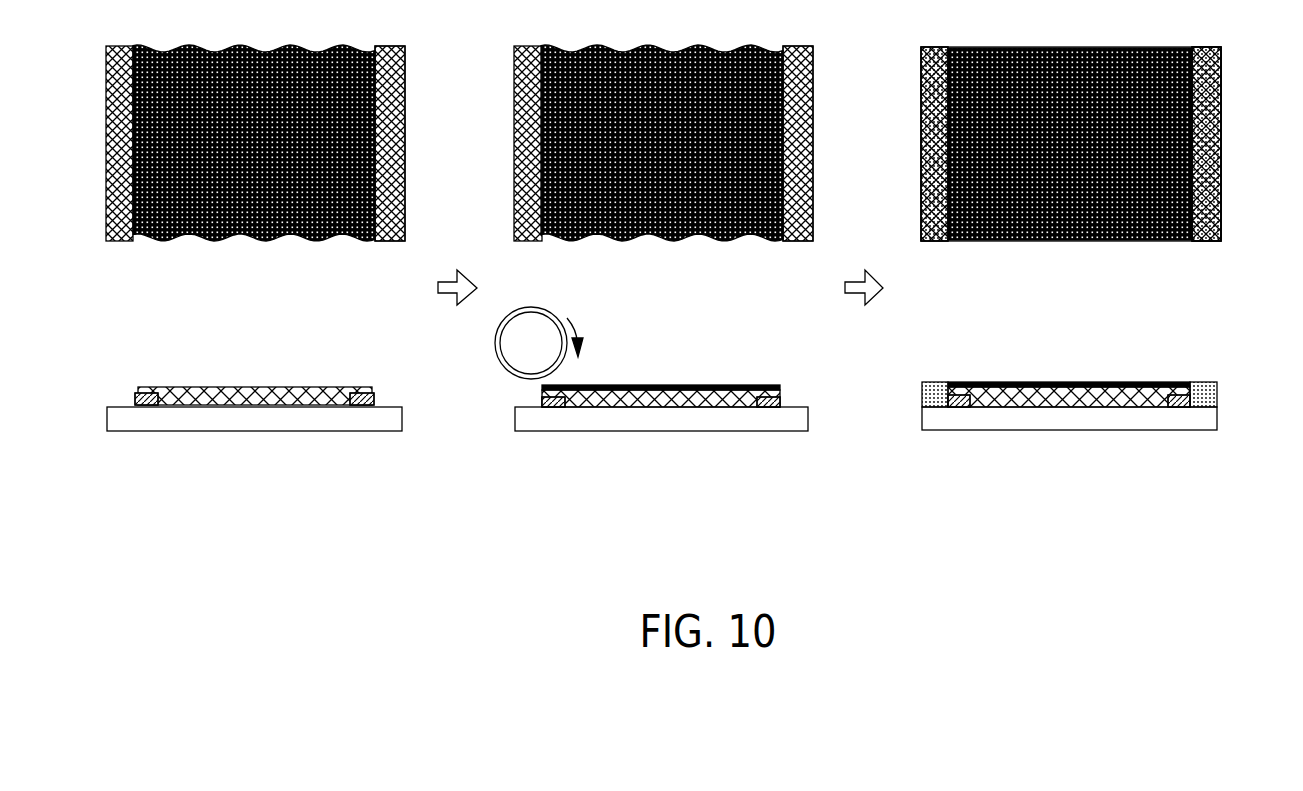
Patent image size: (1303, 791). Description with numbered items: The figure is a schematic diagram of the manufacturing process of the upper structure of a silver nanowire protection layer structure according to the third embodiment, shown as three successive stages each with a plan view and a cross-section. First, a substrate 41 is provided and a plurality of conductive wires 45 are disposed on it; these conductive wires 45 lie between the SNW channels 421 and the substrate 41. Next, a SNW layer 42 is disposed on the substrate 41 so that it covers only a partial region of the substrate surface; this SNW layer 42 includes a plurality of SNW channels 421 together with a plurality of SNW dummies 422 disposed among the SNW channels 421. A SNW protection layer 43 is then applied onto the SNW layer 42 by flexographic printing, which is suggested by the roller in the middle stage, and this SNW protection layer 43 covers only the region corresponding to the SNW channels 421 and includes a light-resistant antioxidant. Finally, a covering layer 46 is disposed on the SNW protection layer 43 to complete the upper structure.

The substrate 41 is at (378, 421).
The SNW layer 42 is at (370, 388).
The SNW channels 421 is at (265, 238).
The SNW dummies 422 is at (393, 151).
The SNW protection layer 43 is at (748, 386).
The conductive wires 45 is at (114, 60).
The covering layer 46 is at (1217, 392).